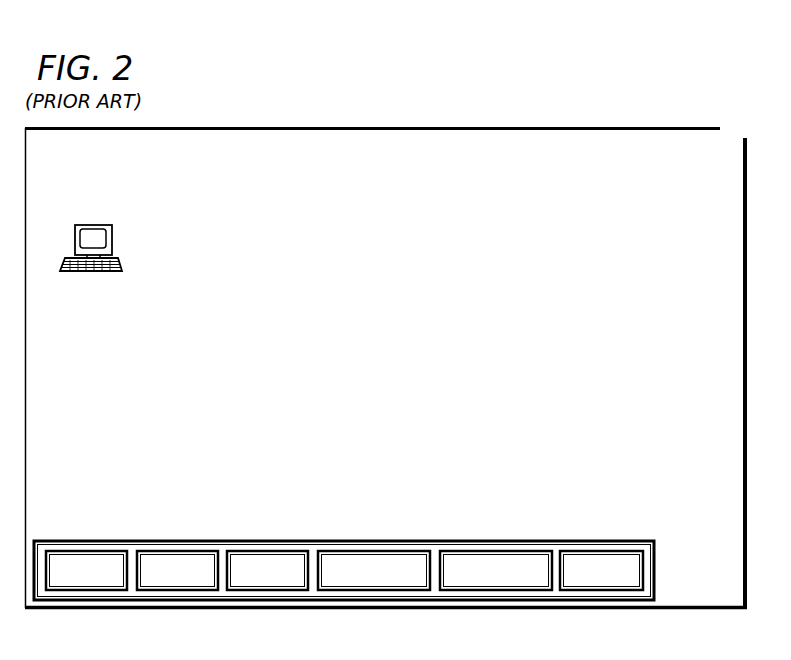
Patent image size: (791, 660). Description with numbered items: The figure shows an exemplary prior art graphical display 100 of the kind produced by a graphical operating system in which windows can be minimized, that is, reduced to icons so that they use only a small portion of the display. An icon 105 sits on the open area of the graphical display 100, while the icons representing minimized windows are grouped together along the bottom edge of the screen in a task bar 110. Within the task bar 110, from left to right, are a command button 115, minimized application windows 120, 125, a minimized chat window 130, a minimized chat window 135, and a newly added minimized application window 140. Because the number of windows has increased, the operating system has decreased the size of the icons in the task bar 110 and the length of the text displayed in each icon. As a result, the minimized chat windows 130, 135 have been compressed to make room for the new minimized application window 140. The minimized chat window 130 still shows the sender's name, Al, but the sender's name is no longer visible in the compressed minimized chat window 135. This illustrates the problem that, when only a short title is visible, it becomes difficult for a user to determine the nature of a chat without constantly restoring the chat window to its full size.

The graphical display 100 is at (371, 341).
The icon 105 is at (113, 241).
The task bar 110 is at (656, 565).
The command button 115 is at (90, 550).
The minimized application window 120 is at (174, 550).
The minimized application window 125 is at (261, 550).
The minimized chat window 130 is at (377, 550).
The minimized chat window 135 is at (507, 550).
The minimized application window 140 is at (610, 550).